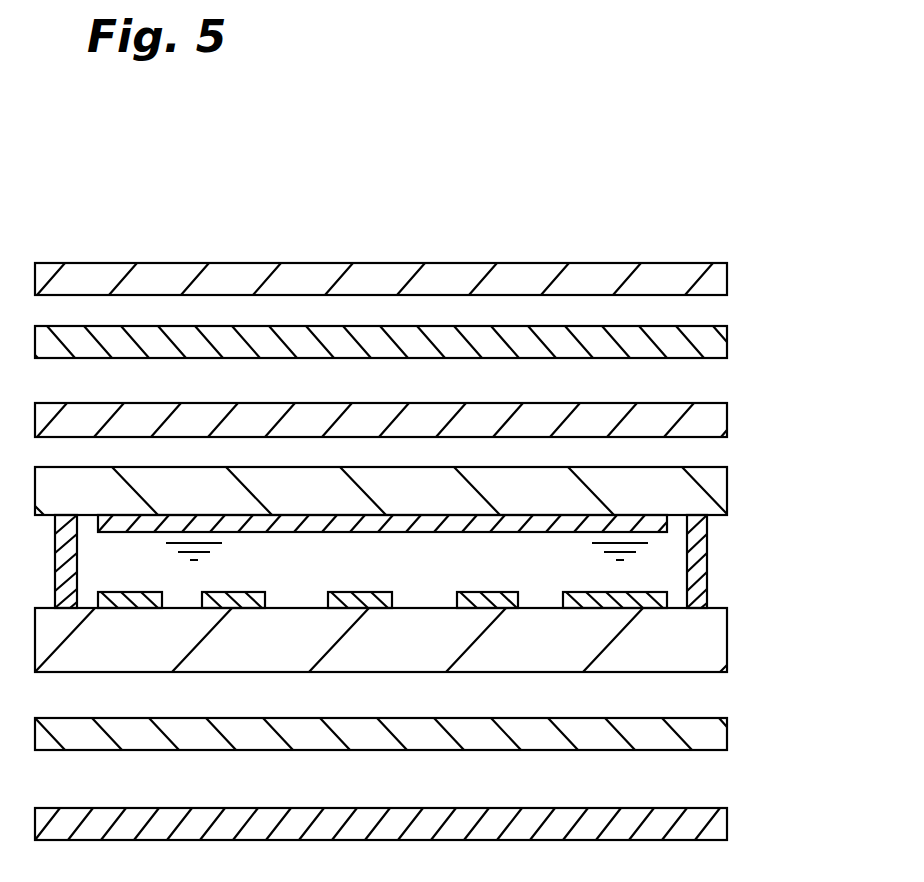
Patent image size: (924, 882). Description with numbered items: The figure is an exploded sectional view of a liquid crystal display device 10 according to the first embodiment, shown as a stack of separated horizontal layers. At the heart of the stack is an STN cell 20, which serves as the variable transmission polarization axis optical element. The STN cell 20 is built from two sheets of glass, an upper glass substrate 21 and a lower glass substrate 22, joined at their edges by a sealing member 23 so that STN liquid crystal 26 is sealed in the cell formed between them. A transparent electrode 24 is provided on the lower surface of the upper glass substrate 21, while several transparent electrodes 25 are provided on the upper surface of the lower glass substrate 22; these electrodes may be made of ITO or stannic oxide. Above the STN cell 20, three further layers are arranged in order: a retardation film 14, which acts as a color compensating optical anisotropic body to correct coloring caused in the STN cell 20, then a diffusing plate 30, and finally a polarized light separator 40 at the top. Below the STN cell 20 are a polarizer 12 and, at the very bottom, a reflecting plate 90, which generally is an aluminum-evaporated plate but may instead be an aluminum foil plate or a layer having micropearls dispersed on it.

The liquid crystal display device 10 is at (572, 223).
The polarized light separator 40 is at (720, 275).
The diffusing plate 30 is at (720, 337).
The retardation film 14 is at (720, 423).
The STN cell 20 is at (742, 523).
The glass substrate 21 is at (714, 485).
The transparent electrode 24 is at (462, 535).
The sealing member 23 is at (710, 577).
The STN liquid crystal 26 is at (637, 565).
The transparent electrodes 25 is at (480, 592).
The glass substrate 22 is at (718, 647).
The polarizer 12 is at (718, 735).
The reflecting plate 90 is at (718, 825).